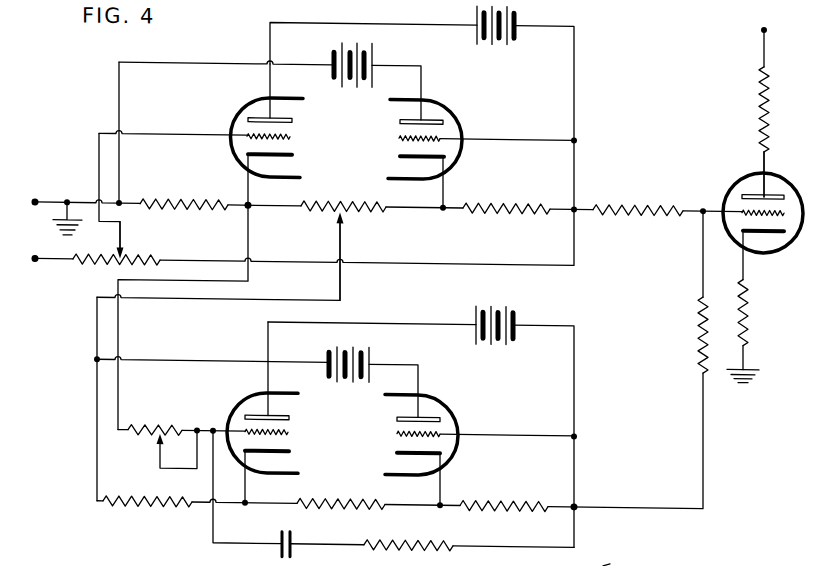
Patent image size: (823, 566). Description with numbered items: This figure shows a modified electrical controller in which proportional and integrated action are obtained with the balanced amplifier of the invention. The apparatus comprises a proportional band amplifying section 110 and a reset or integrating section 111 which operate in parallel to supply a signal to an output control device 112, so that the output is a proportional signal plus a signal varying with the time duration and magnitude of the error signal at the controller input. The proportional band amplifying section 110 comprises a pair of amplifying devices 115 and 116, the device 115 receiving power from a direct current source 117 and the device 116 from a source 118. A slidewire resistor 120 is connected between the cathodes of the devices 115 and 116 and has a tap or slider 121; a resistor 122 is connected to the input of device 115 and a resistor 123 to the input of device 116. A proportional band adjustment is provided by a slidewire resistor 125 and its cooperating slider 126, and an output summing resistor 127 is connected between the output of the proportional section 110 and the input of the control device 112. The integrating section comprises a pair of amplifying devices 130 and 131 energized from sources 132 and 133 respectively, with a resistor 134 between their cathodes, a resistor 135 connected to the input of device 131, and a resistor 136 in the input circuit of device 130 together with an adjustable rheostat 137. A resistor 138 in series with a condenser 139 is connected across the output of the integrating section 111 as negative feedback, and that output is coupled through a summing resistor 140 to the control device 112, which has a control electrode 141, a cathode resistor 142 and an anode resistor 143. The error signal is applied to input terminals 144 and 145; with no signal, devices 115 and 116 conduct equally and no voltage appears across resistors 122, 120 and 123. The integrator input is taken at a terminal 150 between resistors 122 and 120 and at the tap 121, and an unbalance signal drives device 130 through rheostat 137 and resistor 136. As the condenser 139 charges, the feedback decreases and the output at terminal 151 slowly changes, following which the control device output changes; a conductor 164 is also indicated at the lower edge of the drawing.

The proportional band amplifying section 110 is at (353, 135).
The reset or integrating section 111 is at (346, 441).
The output control device 112 is at (758, 195).
The amplifying device 115 is at (242, 101).
The amplifying device 116 is at (455, 104).
The direct current source 117 is at (499, 6).
The source 118 is at (351, 38).
The slidewire resistor 120 is at (348, 191).
The tap or slider 121 is at (347, 209).
The resistor 122 is at (185, 193).
The resistor 123 is at (502, 190).
The slidewire resistor 125 is at (103, 269).
The slider 126 is at (125, 243).
The output summing resistor 127 is at (633, 190).
The amplifying device 130 is at (243, 392).
The amplifying device 131 is at (448, 397).
The source 132 is at (497, 300).
The power source 133 is at (357, 342).
The resistor 134 is at (345, 488).
The resistor 135 is at (510, 490).
The resistor 136 is at (150, 488).
The adjustable rheostat 137 is at (167, 413).
The resistor 138 is at (413, 532).
The condenser 139 is at (288, 526).
The summing resistor 140 is at (700, 318).
The control electrode 141 is at (744, 199).
The cathode resistor 142 is at (750, 307).
The anode resistor 143 is at (762, 95).
The input terminal 144 is at (35, 200).
The input terminal 145 is at (35, 255).
The terminal 150 is at (250, 207).
The terminal 151 is at (575, 499).
The conductor 164 is at (623, 558).